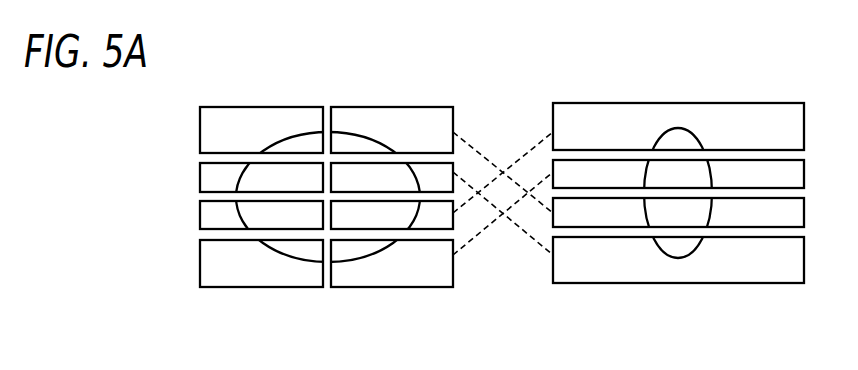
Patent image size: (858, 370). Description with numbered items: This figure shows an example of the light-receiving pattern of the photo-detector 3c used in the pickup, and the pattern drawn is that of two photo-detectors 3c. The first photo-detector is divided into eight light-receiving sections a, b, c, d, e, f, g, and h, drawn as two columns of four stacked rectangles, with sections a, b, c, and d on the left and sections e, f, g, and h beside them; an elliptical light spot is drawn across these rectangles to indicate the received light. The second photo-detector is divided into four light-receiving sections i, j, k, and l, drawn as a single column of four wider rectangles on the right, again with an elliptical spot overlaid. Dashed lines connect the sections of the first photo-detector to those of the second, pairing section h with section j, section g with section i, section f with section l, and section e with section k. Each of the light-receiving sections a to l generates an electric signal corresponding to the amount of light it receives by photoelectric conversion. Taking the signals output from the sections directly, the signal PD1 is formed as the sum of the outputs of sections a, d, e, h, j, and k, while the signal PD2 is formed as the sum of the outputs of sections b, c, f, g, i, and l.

The photo-detector 3c is at (516, 72).
The divided light-receiving section a is at (250, 263).
The divided light-receiving section b is at (250, 216).
The divided light-receiving section c is at (250, 177).
The divided light-receiving section d is at (250, 130).
The divided light-receiving section e is at (400, 263).
The divided light-receiving section f is at (399, 219).
The divided light-receiving section g is at (400, 173).
The divided light-receiving section h is at (400, 130).
The divided light-receiving section i is at (670, 261).
The divided light-receiving section j is at (669, 218).
The divided light-receiving section k is at (668, 171).
The divided light-receiving section l is at (670, 126).